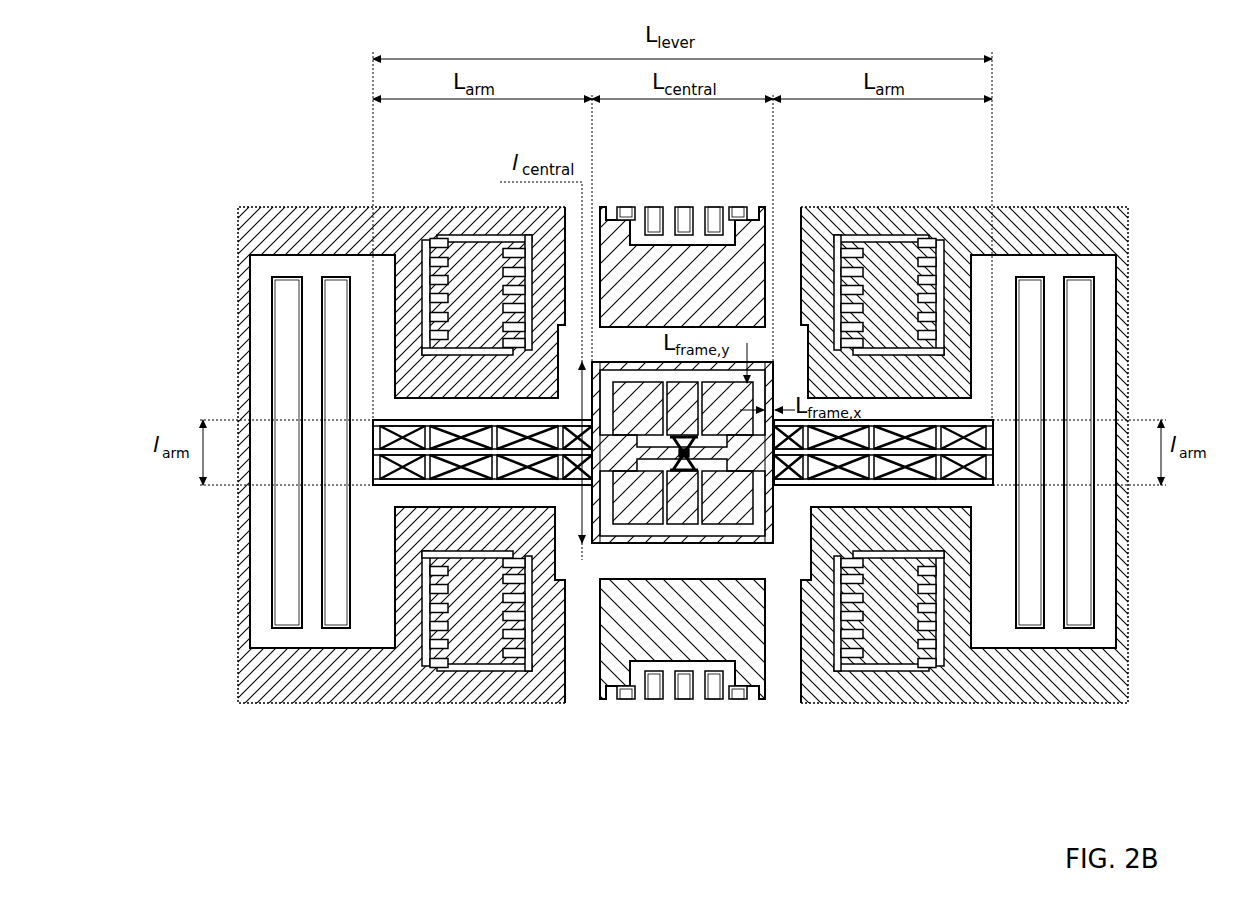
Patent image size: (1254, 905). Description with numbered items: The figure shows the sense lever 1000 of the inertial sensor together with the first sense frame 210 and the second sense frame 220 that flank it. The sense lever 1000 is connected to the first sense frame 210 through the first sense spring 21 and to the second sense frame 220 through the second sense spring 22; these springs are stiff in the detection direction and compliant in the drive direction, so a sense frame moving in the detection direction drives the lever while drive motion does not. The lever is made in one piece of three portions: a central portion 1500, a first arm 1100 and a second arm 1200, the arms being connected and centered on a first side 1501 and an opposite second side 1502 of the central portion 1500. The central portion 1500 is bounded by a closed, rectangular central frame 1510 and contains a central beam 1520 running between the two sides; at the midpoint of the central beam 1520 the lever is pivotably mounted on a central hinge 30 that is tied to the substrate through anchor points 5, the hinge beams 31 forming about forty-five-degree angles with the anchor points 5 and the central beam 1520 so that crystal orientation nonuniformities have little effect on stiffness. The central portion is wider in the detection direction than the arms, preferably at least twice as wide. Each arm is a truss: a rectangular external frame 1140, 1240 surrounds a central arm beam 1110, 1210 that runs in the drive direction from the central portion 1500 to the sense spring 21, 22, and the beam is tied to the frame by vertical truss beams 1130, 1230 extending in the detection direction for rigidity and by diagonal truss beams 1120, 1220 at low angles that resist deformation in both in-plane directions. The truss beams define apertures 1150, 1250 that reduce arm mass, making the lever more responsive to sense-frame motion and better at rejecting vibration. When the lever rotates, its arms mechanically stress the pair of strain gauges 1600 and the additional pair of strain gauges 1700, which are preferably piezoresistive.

The sense lever 1000 is at (362, 503).
The first sense frame 210 is at (263, 227).
The second sense frame 220 is at (1101, 228).
The first sense spring 21 is at (275, 592).
The second sense spring 22 is at (1091, 594).
The first arm 1100 is at (400, 470).
The central arm beam 1110 is at (445, 470).
The diagonal truss beams 1120 is at (380, 437).
The vertical truss beams 1130 is at (418, 445).
The external frame 1140 is at (380, 482).
The apertures 1150 is at (460, 428).
The second arm 1200 is at (985, 503).
The central arm beam 1210 is at (975, 483).
The diagonal truss beams 1220 is at (986, 437).
The vertical truss beams 1230 is at (948, 445).
The external frame 1240 is at (986, 482).
The apertures 1250 is at (906, 428).
The central portion 1500 is at (585, 555).
The first side 1501 is at (595, 540).
The second side 1502 is at (778, 525).
The central frame 1510 is at (672, 629).
The central beam 1520 is at (690, 522).
The anchor points 5 is at (703, 584).
The central hinge 30 is at (745, 468).
The hinge beams 31 is at (710, 463).
The pair of strain gauges 1600 is at (612, 262).
The additional pair of strain gauges 1700 is at (598, 700).